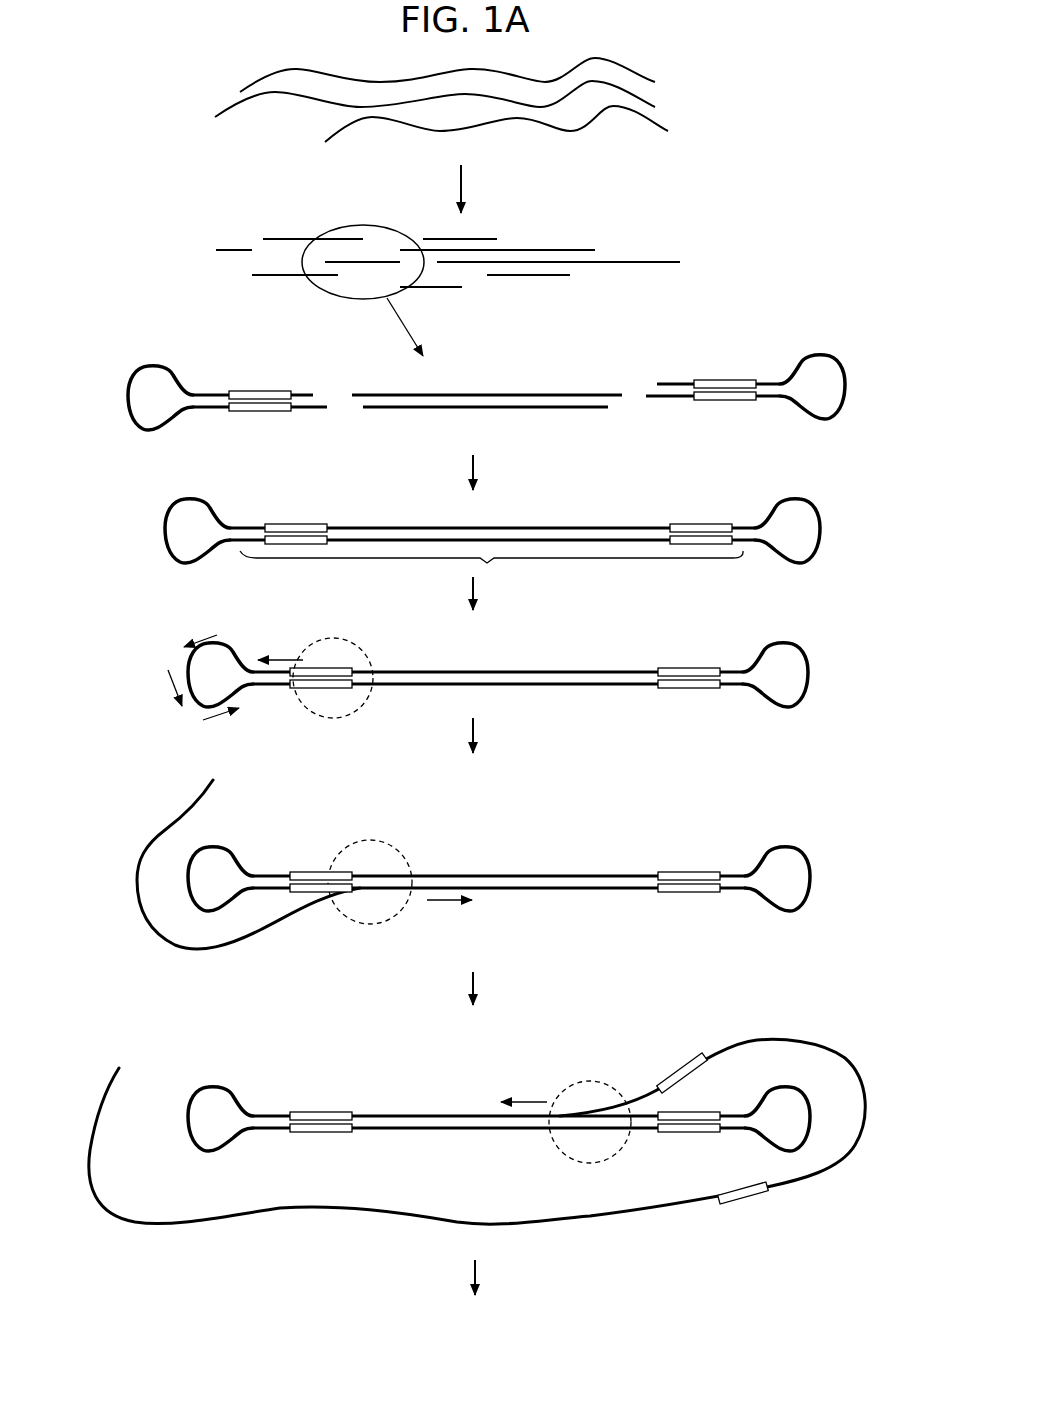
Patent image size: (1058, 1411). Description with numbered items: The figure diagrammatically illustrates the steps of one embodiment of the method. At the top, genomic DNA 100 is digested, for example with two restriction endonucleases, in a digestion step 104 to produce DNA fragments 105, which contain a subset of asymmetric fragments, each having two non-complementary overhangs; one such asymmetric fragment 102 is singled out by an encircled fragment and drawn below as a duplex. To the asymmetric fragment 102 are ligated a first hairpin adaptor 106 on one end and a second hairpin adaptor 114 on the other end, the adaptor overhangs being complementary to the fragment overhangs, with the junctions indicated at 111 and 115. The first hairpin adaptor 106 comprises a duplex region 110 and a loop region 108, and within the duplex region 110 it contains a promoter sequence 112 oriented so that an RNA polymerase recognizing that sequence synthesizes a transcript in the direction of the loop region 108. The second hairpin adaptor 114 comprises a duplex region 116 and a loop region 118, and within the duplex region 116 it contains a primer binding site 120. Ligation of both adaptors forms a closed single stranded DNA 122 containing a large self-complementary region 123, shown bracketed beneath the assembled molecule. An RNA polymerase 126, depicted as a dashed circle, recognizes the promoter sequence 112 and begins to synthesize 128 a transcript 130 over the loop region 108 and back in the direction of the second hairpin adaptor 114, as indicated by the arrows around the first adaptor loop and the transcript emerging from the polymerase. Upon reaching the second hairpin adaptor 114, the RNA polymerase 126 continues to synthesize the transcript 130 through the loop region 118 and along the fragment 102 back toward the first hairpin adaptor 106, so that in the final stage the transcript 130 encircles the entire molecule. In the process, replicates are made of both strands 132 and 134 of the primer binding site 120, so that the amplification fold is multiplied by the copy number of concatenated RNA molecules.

The genomic DNA 100 is at (646, 58).
The asymmetric fragment 102 is at (340, 225).
The digestion step 104 is at (489, 189).
The DNA fragments 105 is at (648, 227).
The first hairpin adaptor 106 is at (205, 683).
The loop region 108 is at (130, 421).
The duplex region 110 is at (249, 393).
The first gap 111 is at (327, 382).
The promoter sequence 112 is at (252, 413).
The second hairpin adaptor 114 is at (760, 680).
The second gap 115 is at (633, 410).
The duplex region 116 is at (718, 380).
The loop region 118 is at (818, 421).
The primer binding site 120 is at (718, 401).
The closed single stranded DNA 122 is at (129, 551).
The self-complementary region 123 is at (487, 563).
The RNA polymerase 126 is at (300, 708).
The synthesis step 128 is at (142, 720).
The transcript 130 is at (132, 910).
The first strand replicate 132 is at (697, 1055).
The second strand replicate 134 is at (782, 1196).